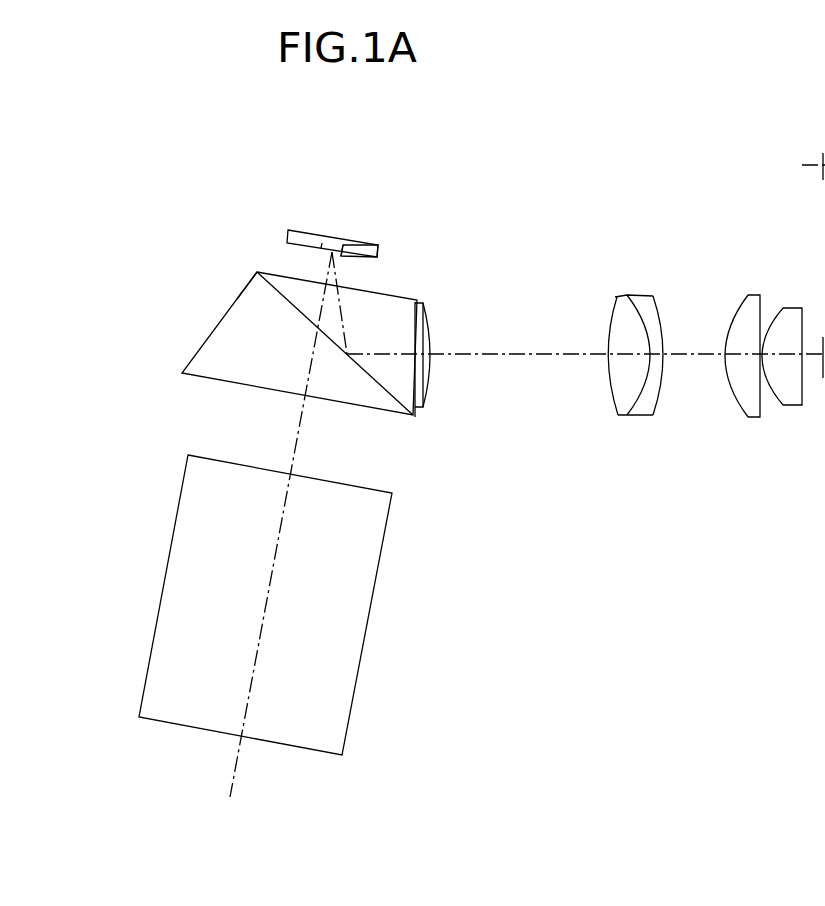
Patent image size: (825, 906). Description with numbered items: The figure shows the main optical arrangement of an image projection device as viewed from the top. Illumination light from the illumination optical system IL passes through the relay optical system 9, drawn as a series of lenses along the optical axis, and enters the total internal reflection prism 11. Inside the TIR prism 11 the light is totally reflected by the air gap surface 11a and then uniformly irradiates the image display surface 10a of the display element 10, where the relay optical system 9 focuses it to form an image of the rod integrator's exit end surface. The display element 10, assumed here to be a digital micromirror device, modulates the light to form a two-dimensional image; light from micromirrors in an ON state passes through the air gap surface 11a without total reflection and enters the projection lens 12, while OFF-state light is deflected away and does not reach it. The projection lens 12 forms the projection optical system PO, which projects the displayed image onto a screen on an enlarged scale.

The relay optical system 9 is at (802, 428).
The display element 10 is at (287, 237).
The image display surface 10a is at (376, 257).
The total internal reflection (TIR) prism 11 is at (192, 354).
The air gap surface 11a is at (258, 290).
The projection lens 12 is at (360, 667).
The projection optical system PO is at (458, 538).
The illumination optical system IL is at (795, 505).